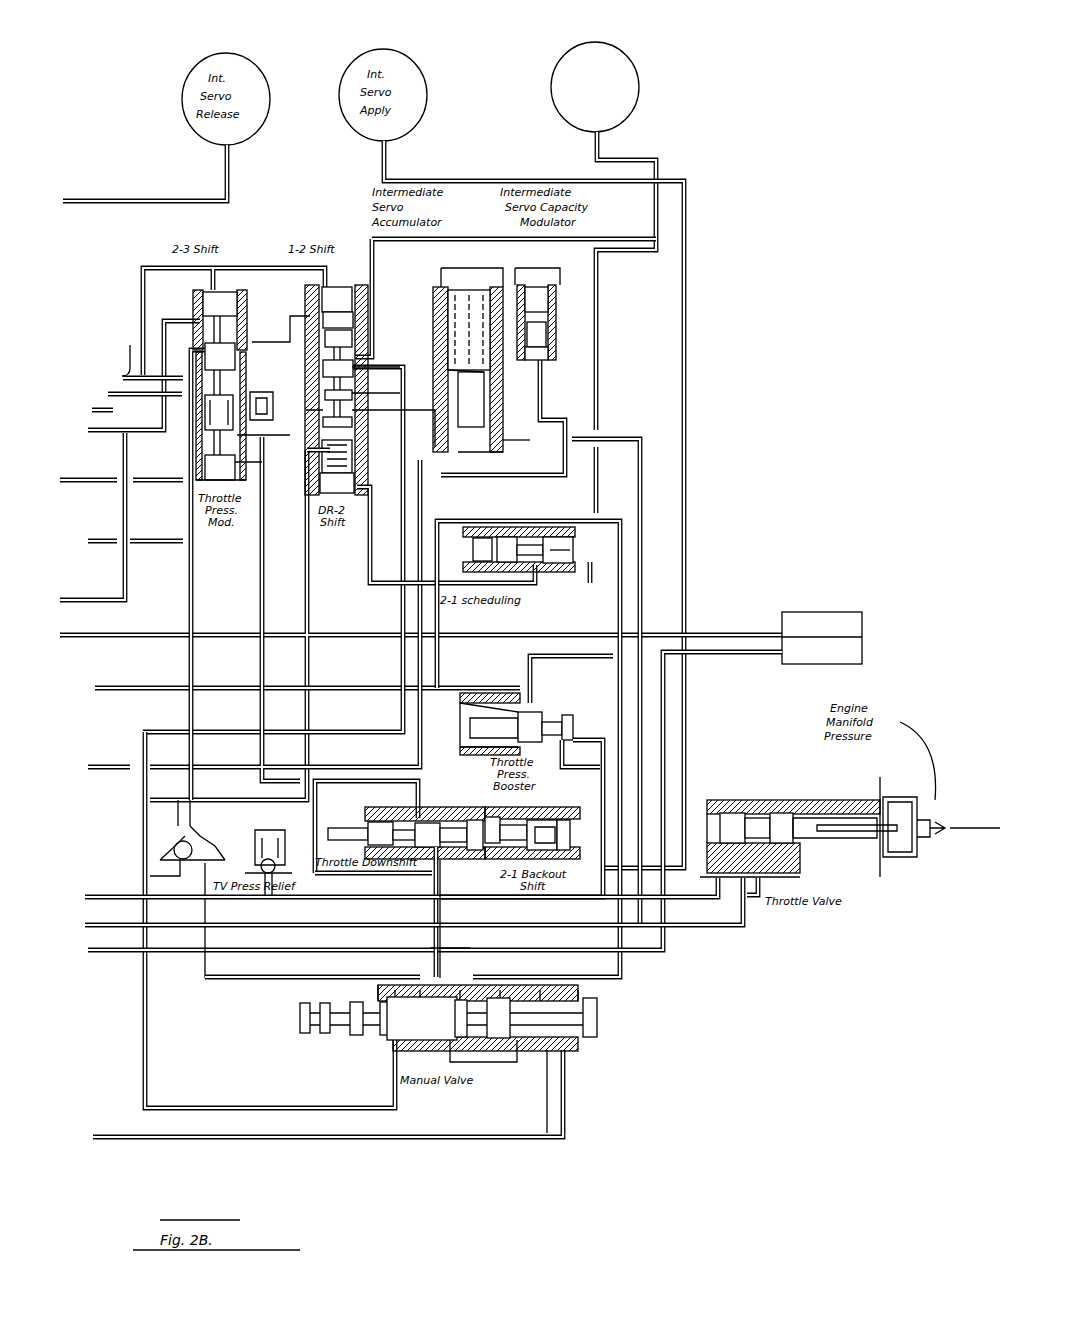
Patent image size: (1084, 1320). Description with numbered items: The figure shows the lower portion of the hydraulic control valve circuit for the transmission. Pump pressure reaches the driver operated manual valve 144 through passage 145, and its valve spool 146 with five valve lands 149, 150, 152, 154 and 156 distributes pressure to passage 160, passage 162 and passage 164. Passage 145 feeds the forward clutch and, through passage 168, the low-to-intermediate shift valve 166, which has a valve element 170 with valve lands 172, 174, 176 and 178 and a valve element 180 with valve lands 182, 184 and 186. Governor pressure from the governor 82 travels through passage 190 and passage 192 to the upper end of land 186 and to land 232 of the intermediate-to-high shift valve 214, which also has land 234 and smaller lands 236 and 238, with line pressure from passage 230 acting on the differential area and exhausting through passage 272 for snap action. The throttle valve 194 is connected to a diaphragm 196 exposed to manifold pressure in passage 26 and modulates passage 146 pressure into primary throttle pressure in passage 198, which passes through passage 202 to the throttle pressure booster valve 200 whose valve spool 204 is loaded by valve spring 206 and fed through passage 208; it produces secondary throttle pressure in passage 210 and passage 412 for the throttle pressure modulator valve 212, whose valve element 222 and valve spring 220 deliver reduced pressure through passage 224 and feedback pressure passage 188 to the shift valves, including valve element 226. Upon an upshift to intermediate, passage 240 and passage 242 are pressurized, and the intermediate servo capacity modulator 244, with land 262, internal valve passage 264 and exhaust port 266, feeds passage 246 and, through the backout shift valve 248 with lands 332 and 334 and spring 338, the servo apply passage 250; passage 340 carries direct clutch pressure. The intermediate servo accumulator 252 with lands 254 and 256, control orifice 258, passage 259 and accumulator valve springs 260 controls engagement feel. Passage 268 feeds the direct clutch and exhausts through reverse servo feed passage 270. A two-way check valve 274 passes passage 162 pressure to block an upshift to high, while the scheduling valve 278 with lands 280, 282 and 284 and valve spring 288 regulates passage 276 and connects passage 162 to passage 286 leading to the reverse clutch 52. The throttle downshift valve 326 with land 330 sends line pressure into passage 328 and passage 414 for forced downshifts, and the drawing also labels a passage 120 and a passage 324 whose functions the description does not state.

The passage 26 is at (965, 846).
The reverse clutch 52 is at (620, 48).
The fluid pressure governor 82 is at (862, 610).
The passage 120 is at (228, 798).
The manual valve 144 is at (447, 965).
The passage 145 is at (265, 977).
The passage 146 is at (746, 928).
The valve land 149 is at (360, 1002).
The valve land 150 is at (385, 1002).
The valve land 152 is at (462, 1003).
The valve land 154 is at (498, 1000).
The valve land 156 is at (597, 1010).
The passage 160 is at (380, 1062).
The passage 162 is at (625, 975).
The passage 164 is at (505, 1140).
The 1-2 shift valve 166 is at (320, 382).
The passage 168 is at (311, 672).
The valve element 170 is at (352, 398).
The valve land 172 is at (352, 470).
The valve land 174 is at (352, 447).
The valve land 176 is at (352, 420).
The valve land 178 is at (352, 370).
The valve element 180 is at (340, 302).
The valve land 182 is at (352, 345).
The valve land 184 is at (352, 326).
The valve land 186 is at (318, 297).
The feedback pressure passage 188 is at (276, 390).
The passage 190 is at (733, 630).
The passage 192 is at (104, 396).
The throttle valve 194 is at (757, 828).
The diaphragm 196 is at (890, 797).
The passage 198 is at (683, 897).
The throttle pressure booster valve 200 is at (530, 725).
The passage 202 is at (605, 782).
The valve spool 204 is at (567, 720).
The valve spring 206 is at (462, 735).
The passage 208 is at (646, 792).
The passage 210 is at (455, 682).
The throttle pressure modulator valve 212 is at (246, 478).
The 2-3 shift valve 214 is at (235, 318).
The valve spring 220 is at (205, 452).
The valve element 222 is at (200, 482).
The passage 224 is at (268, 388).
The valve element 226 is at (258, 355).
The passage 230 is at (120, 432).
The valve land 232 is at (230, 300).
The valve land 234 is at (200, 340).
The valve land 236 is at (218, 360).
The valve land 238 is at (200, 428).
The passage 240 is at (308, 420).
The passage 242 is at (525, 470).
The intermediate servo capacity modulator 244 is at (490, 372).
The passage 246 is at (545, 420).
The 2-1 backout shift valve 248 is at (512, 830).
The passage 250 is at (688, 458).
The intermediate servo accumulator 252 is at (460, 300).
The accumulator land 254 is at (484, 380).
The accumulator land 256 is at (545, 458).
The control orifice 258 is at (530, 285).
The passage 259 is at (612, 437).
The accumulator valve springs 260 is at (448, 268).
The valve land 262 is at (548, 355).
The internal valve passage 264 is at (548, 310).
The exhaust port 266 is at (546, 330).
The passage 268 is at (118, 376).
The reverse servo feed passage 270 is at (104, 356).
The passage 272 is at (188, 560).
The two-way check valve 274 is at (170, 842).
The passage 276 is at (445, 580).
The 2-1 scheduling valve 278 is at (530, 545).
The valve land 280 is at (505, 537).
The valve land 282 is at (482, 538).
The valve land 284 is at (555, 540).
The passage 286 is at (600, 574).
The valve spring 288 is at (573, 550).
The passage 324 is at (170, 800).
The throttle downshift valve 326 is at (380, 822).
The passage 328 is at (260, 580).
The valve land 330 is at (430, 823).
The valve land 332 is at (560, 855).
The valve land 334 is at (470, 862).
The spring 338 is at (545, 820).
The passage 340 is at (338, 765).
The passage 412 is at (100, 478).
The passage 414 is at (150, 538).